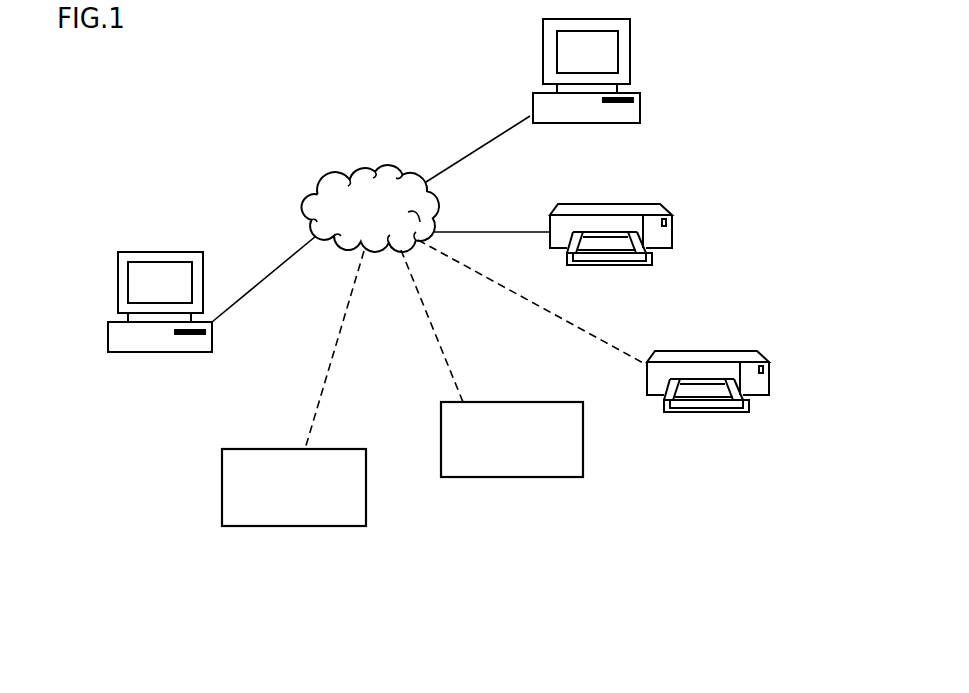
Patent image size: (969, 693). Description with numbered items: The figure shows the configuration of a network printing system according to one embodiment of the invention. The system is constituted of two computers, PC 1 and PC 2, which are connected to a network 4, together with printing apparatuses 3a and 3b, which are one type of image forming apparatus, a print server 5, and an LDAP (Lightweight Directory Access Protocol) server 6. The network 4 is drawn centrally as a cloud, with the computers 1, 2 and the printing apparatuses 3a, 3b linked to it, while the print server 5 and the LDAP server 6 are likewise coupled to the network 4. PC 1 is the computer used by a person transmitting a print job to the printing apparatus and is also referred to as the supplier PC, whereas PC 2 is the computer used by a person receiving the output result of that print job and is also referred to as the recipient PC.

The computer 1 is at (135, 252).
The computer 2 is at (640, 107).
The printing apparatus 3a is at (672, 232).
The printing apparatus 3b is at (769, 383).
The network 4 is at (359, 165).
The print server 5 is at (557, 477).
The LDAP server 6 is at (338, 526).